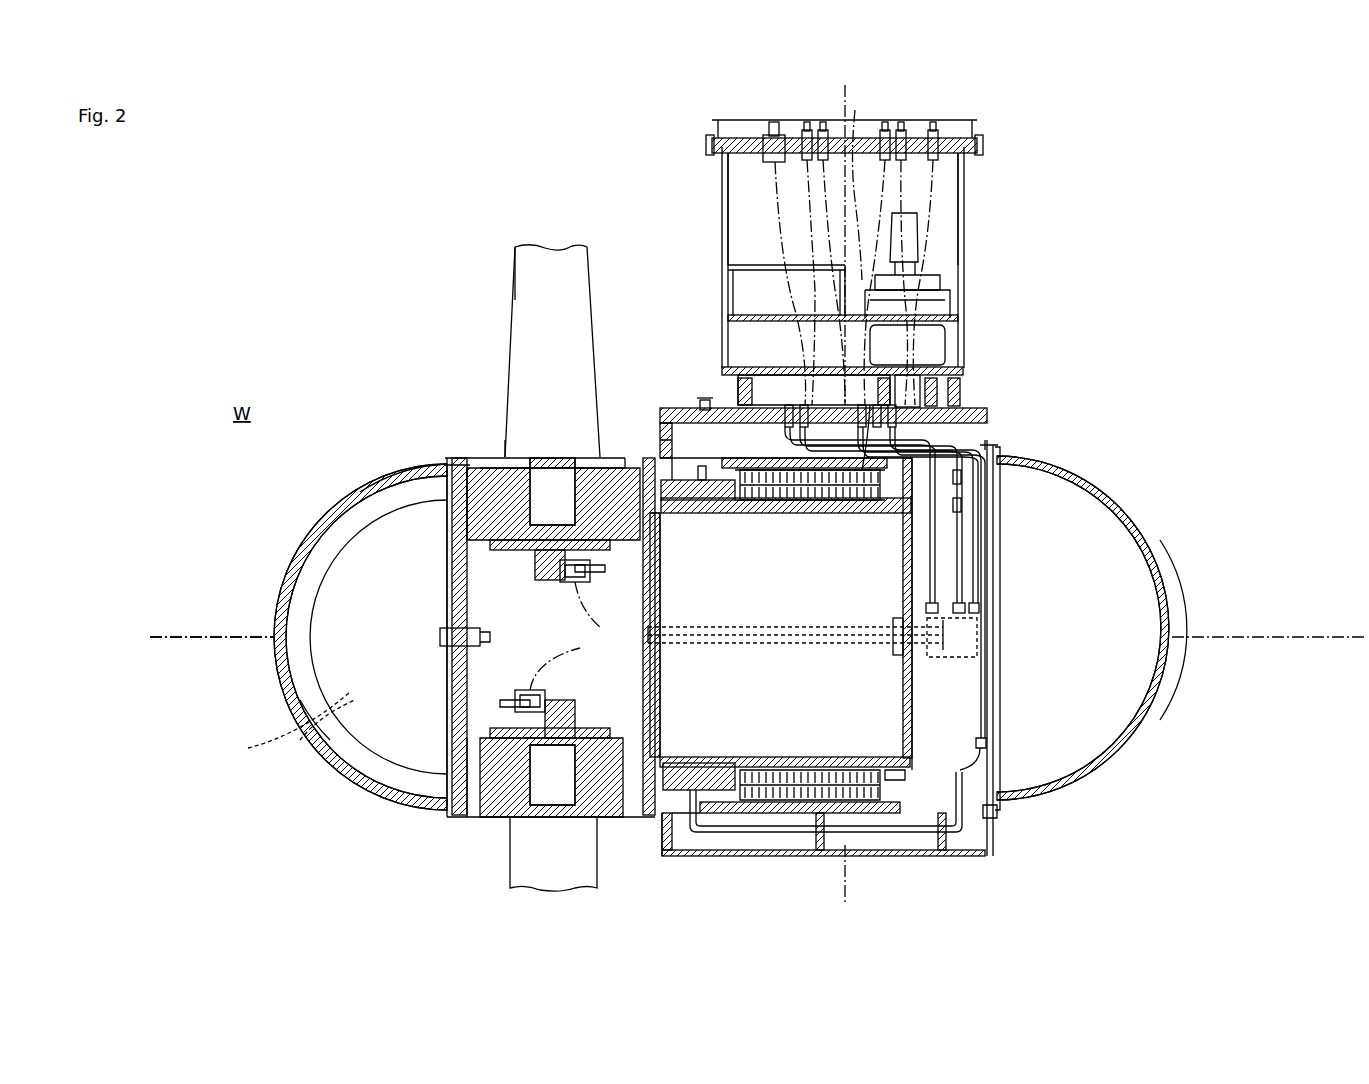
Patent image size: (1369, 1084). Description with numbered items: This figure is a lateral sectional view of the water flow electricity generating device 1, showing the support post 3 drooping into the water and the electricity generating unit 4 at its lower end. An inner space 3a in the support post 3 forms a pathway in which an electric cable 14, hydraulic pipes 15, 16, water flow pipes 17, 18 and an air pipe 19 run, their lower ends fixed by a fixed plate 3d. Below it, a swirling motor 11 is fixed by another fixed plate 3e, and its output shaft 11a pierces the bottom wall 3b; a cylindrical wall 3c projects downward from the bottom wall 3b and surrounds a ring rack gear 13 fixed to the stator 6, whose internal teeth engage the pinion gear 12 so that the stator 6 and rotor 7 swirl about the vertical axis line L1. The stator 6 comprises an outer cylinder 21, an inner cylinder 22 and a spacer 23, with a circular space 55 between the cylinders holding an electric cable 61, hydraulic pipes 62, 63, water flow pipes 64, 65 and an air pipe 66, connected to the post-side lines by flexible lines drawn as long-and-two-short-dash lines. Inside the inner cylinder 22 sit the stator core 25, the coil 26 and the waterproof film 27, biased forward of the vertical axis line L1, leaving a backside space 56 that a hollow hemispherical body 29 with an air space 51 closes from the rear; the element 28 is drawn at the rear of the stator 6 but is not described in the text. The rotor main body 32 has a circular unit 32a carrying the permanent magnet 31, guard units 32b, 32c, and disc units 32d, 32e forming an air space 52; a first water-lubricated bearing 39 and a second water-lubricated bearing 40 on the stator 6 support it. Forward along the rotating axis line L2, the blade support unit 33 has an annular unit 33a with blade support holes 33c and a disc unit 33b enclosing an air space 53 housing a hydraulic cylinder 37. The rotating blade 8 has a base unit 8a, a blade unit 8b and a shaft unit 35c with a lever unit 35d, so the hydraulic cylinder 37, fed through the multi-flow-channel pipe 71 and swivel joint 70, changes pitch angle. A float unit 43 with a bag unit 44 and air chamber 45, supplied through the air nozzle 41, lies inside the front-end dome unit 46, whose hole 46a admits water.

The water flow electricity generating device 1 is at (400, 243).
The support post 3 is at (965, 190).
The inner space 3a is at (730, 215).
The bottom wall 3b is at (727, 282).
The cylindrical wall 3c is at (763, 365).
The fixed plate 3d is at (735, 152).
The fixed plate 3e is at (962, 305).
The electricity generating unit 4 is at (432, 447).
The stator 6 is at (990, 855).
The rotor 7 is at (443, 816).
The rotating blade 8 is at (515, 305).
The base unit 8a is at (520, 440).
The blade unit 8b is at (530, 270).
The swirling motor 11 is at (930, 280).
The output shaft 11a is at (900, 360).
The pinion gear 12 is at (965, 362).
The rack gear 13 is at (937, 388).
The electric cable 14 is at (770, 125).
The hydraulic pipe 15 is at (805, 124).
The hydraulic pipe 16 is at (823, 124).
The water flow pipe 17 is at (885, 124).
The water flow pipe 18 is at (901, 124).
The air pipe 19 is at (933, 124).
The outer cylinder 21 is at (700, 402).
The inner cylinder 22 is at (660, 450).
The spacer 23 is at (660, 425).
The stator core 25 is at (778, 462).
The coil 26 is at (740, 455).
The waterproof film 27 is at (800, 488).
The end cover 28 is at (1000, 760).
The hollow hemispherical body 29 is at (1135, 735).
The permanent magnet 31 is at (781, 500).
The rotor main body 32 is at (915, 672).
The circular unit 32a is at (742, 514).
The guard unit 32b is at (904, 514).
The guard unit 32c is at (702, 514).
The disc unit 32d is at (902, 695).
The disc unit 32e is at (655, 698).
The blade support unit 33 is at (633, 822).
The annular unit 33a is at (493, 790).
The disc unit 33b is at (376, 793).
The blade support hole 33c is at (482, 460).
The shaft unit 35c is at (535, 563).
The lever unit 35d is at (585, 575).
The hydraulic cylinder 37 is at (570, 585).
The first water-lubricated bearing 39 is at (900, 765).
The second water-lubricated bearing 40 is at (715, 768).
The air nozzle 41 is at (475, 630).
The float unit 43 is at (300, 672).
The bag unit 44 is at (332, 722).
The air chamber 45 is at (292, 726).
The front-end dome unit 46 is at (300, 560).
The hole 46a is at (342, 515).
The air space 51 is at (1158, 600).
The air space 52 is at (868, 815).
The air space 53 is at (457, 808).
The circular space 55 is at (703, 400).
The backside space 56 is at (927, 800).
The electric cable 61 is at (852, 505).
The hydraulic pipe 62 is at (937, 525).
The hydraulic pipe 63 is at (962, 545).
The water flow pipe 64 is at (982, 690).
The water flow pipe 65 is at (985, 720).
The air pipe 66 is at (977, 560).
The swivel joint 70 is at (960, 633).
The multi-flow-channel pipe 71 is at (812, 650).
The vertical axis line L1 is at (857, 495).
The rotating axis line L2 is at (190, 637).